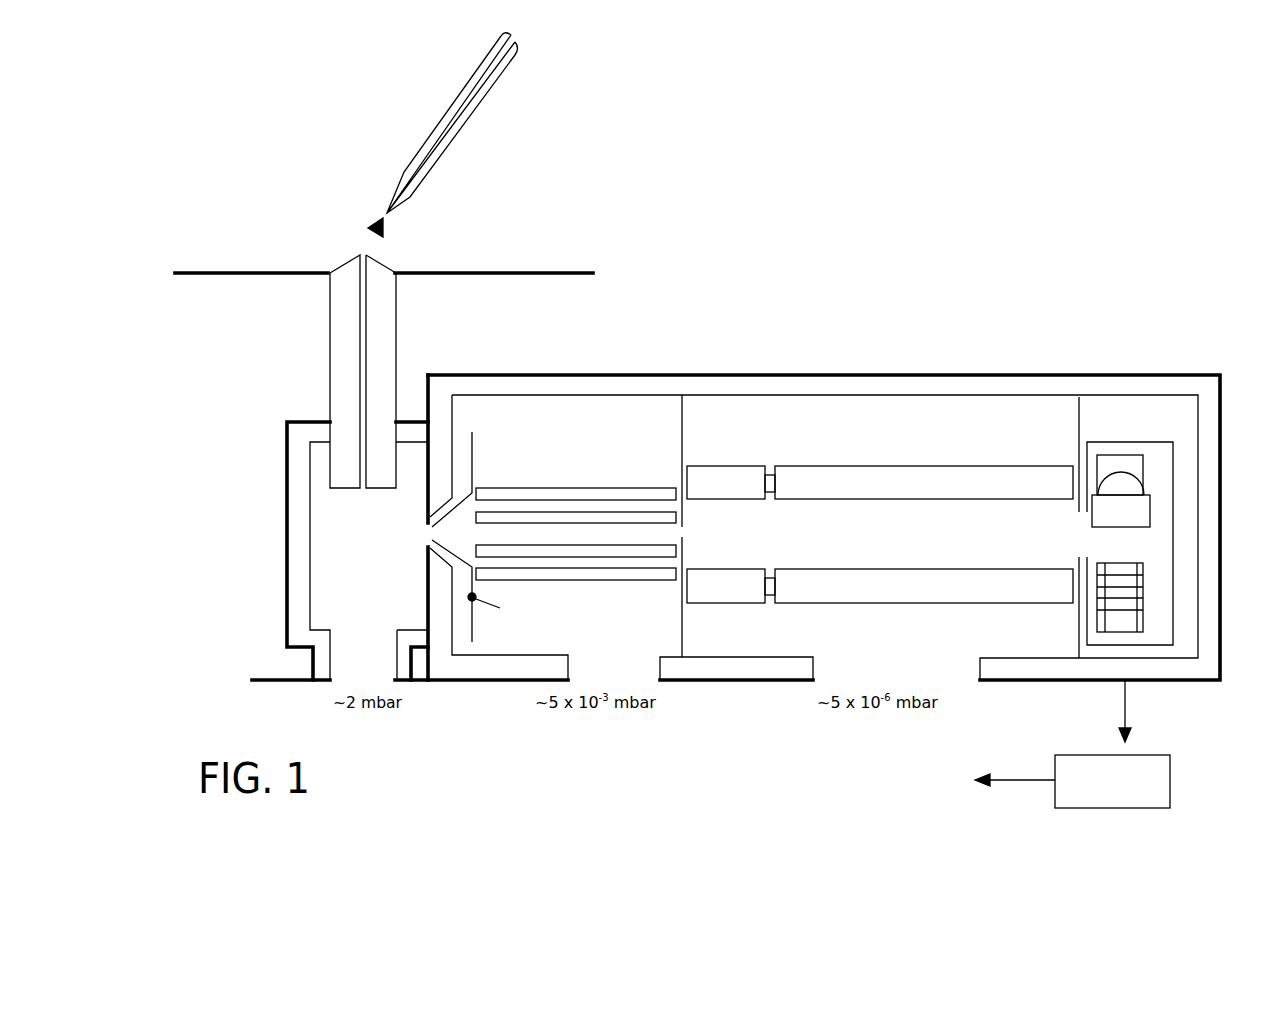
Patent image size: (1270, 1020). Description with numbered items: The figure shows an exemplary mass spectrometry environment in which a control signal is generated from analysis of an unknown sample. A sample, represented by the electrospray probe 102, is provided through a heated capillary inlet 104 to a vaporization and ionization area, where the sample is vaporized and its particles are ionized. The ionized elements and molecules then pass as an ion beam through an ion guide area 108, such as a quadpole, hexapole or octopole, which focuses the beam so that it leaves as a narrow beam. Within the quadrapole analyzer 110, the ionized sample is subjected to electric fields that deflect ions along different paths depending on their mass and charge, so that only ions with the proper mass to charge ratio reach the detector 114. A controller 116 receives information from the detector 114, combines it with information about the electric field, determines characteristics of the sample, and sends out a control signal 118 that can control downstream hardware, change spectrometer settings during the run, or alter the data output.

The electrospray probe 102 is at (363, 198).
The heated capillary inlet 104 is at (387, 270).
The ion guide area 108 is at (618, 413).
The quadrapole analyzer 110 is at (1000, 413).
The detector 114 is at (1160, 398).
The controller 116 is at (1170, 765).
The control signal 118 is at (940, 773).